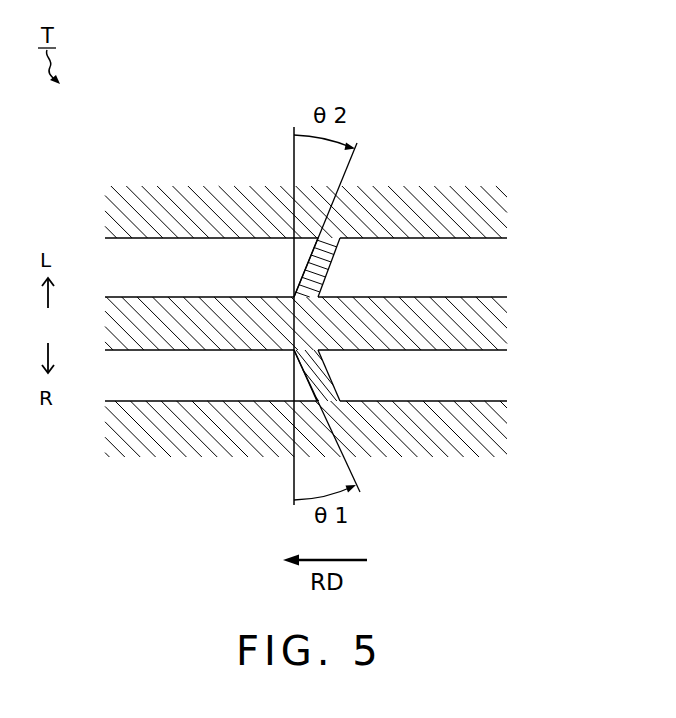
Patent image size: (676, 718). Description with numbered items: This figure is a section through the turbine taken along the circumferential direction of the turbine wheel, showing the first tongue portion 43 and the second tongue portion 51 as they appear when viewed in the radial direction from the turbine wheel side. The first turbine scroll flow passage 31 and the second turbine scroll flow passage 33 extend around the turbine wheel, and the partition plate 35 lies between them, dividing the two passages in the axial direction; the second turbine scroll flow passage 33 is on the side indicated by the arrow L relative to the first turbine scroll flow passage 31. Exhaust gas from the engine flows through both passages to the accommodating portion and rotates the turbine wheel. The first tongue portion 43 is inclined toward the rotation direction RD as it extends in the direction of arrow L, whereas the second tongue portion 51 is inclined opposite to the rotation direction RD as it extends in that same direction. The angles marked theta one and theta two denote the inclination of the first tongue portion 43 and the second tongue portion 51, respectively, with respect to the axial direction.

The first turbine scroll flow passage 31 is at (215, 380).
The second turbine scroll flow passage 33 is at (212, 258).
The partition plate 35 is at (447, 297).
The first tongue portion 43 is at (317, 380).
The second tongue portion 51 is at (313, 267).